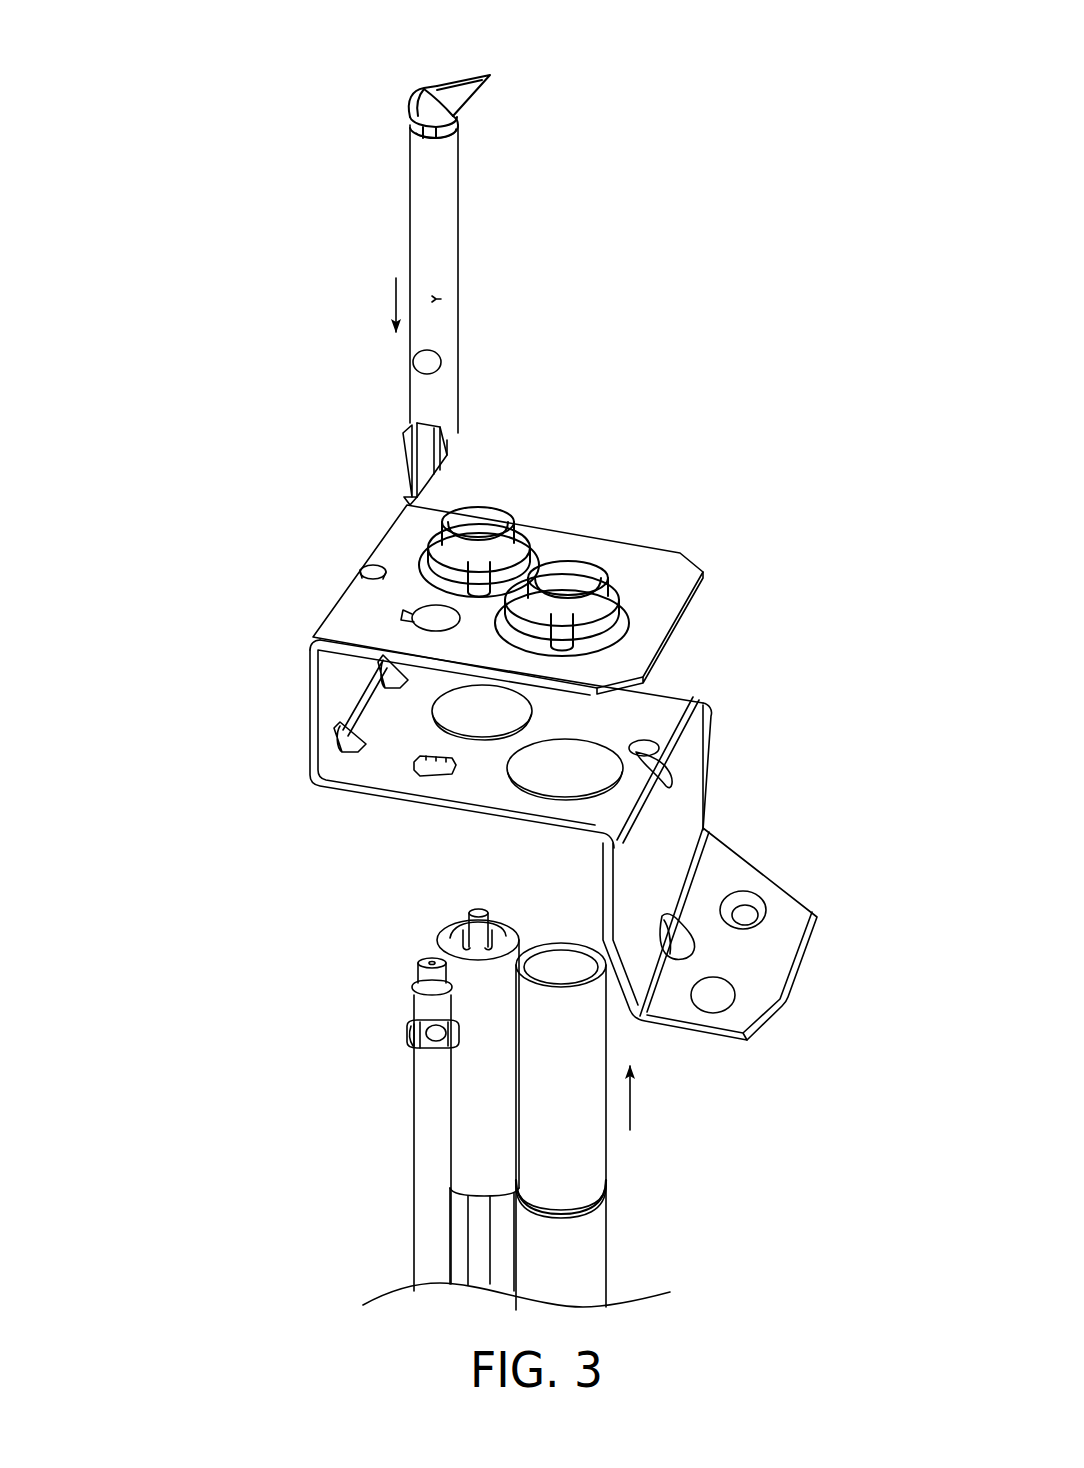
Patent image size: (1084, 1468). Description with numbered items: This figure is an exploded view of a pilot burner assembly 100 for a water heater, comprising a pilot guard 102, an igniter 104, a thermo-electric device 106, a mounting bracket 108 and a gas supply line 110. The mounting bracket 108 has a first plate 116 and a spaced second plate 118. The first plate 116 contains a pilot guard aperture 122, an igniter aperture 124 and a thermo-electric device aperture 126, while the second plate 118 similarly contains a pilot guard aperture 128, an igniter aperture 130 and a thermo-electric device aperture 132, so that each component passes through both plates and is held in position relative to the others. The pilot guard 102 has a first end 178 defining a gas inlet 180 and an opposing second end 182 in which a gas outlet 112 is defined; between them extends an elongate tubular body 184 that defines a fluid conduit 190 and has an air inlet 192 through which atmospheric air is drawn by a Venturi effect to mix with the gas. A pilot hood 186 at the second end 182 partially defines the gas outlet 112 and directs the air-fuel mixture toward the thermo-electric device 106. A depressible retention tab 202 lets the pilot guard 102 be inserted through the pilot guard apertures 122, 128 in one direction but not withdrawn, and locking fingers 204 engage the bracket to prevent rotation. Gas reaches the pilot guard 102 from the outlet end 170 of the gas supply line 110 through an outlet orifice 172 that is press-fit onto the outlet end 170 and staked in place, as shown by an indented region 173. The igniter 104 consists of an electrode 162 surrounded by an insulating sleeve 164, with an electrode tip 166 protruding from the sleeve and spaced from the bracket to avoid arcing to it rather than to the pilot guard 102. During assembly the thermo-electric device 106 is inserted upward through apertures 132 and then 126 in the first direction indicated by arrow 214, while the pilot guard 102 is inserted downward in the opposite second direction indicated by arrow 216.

The pilot burner assembly 100 is at (600, 86).
The pilot guard 102 is at (407, 258).
The igniter 104 is at (450, 918).
The thermo-electric device 106 is at (618, 1220).
The mounting bracket 108 is at (302, 705).
The gas supply line 110 is at (410, 1128).
The gas outlet 112 is at (438, 138).
The first plate 116 is at (650, 582).
The second plate 118 is at (652, 725).
The pilot guard aperture 122 is at (408, 620).
The igniter aperture 124 is at (515, 533).
The thermo-electric device aperture 126 is at (582, 590).
The pilot guard aperture 128 is at (433, 770).
The igniter aperture 130 is at (480, 708).
The thermo-electric device aperture 132 is at (590, 748).
The electrode 162 is at (462, 940).
The insulating sleeve 164 is at (500, 938).
The electrode tip 166 is at (479, 913).
The outlet end 170 is at (411, 970).
The outlet orifice 172 is at (410, 1011).
The indented region 173 is at (418, 1040).
The first end 178 is at (470, 437).
The gas inlet 180 is at (432, 430).
The second end 182 is at (403, 95).
The elongate tubular body 184 is at (441, 233).
The pilot hood 186 is at (445, 86).
The fluid conduit 190 is at (442, 299).
The air inlet 192 is at (418, 372).
The depressible retention tab 202 is at (405, 440).
The locking fingers 204 is at (445, 465).
The first direction arrow 214 is at (630, 1103).
The second direction arrow 216 is at (395, 303).